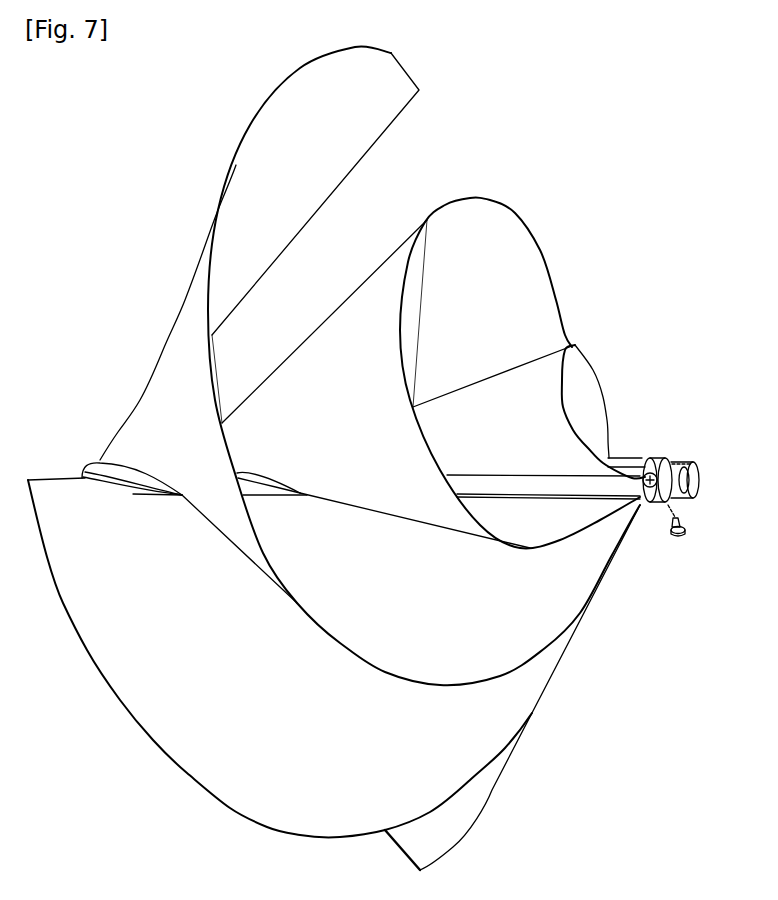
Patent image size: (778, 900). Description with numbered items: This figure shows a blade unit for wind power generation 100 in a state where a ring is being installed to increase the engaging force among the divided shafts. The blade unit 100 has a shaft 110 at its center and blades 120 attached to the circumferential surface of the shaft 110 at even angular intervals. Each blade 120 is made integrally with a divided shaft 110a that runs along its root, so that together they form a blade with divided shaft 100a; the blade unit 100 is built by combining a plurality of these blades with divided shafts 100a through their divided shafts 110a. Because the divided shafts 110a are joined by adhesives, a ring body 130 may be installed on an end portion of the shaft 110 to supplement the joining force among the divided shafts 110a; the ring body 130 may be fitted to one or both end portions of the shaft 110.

The blade unit for wind power generation 100 is at (92, 120).
The blade with divided shaft 100a is at (518, 211).
The blade 120 is at (530, 281).
The shaft 110 is at (706, 455).
The divided shaft 110a is at (656, 457).
The ring body 130 is at (652, 516).